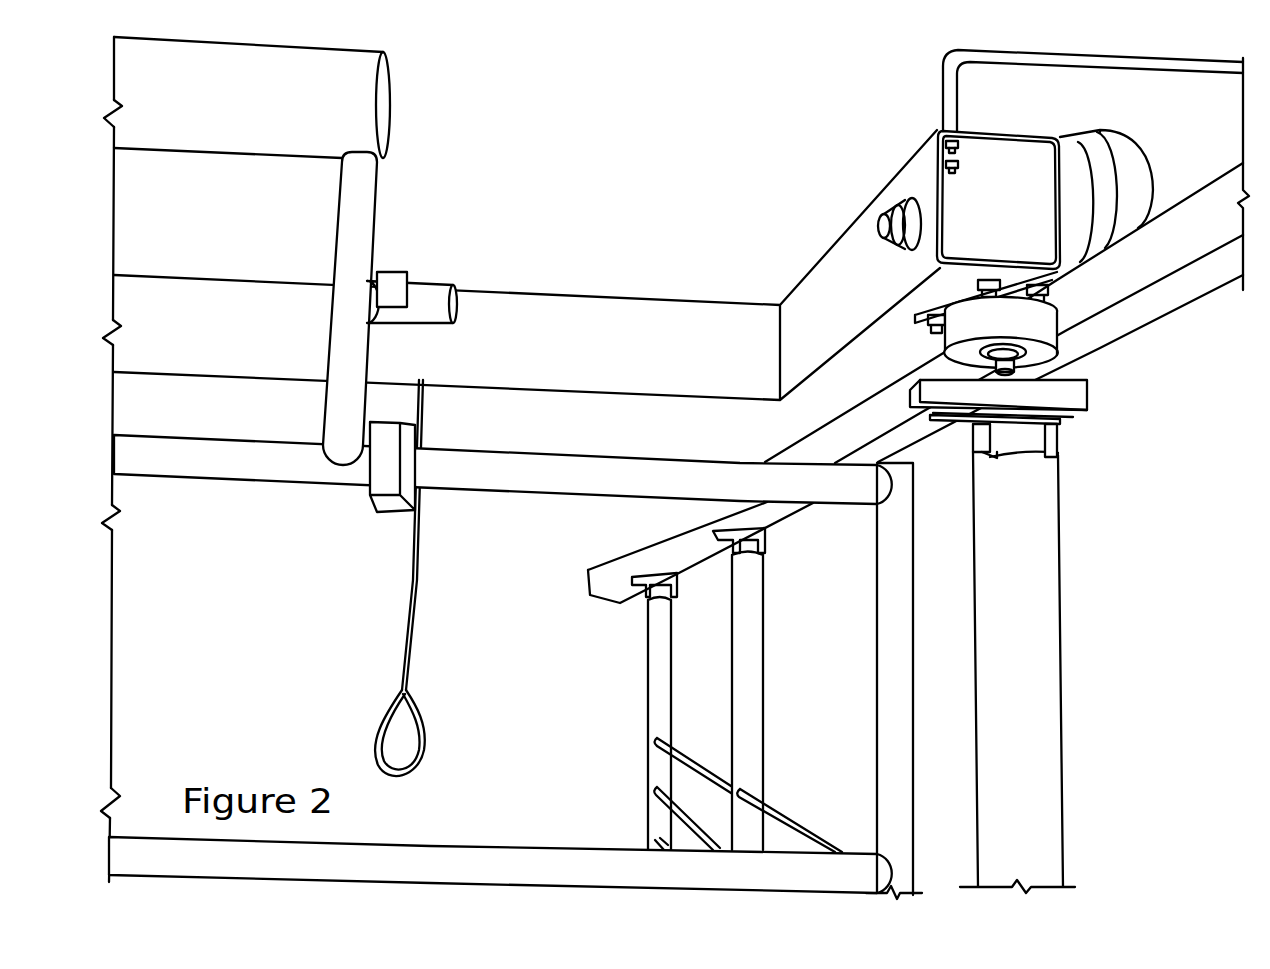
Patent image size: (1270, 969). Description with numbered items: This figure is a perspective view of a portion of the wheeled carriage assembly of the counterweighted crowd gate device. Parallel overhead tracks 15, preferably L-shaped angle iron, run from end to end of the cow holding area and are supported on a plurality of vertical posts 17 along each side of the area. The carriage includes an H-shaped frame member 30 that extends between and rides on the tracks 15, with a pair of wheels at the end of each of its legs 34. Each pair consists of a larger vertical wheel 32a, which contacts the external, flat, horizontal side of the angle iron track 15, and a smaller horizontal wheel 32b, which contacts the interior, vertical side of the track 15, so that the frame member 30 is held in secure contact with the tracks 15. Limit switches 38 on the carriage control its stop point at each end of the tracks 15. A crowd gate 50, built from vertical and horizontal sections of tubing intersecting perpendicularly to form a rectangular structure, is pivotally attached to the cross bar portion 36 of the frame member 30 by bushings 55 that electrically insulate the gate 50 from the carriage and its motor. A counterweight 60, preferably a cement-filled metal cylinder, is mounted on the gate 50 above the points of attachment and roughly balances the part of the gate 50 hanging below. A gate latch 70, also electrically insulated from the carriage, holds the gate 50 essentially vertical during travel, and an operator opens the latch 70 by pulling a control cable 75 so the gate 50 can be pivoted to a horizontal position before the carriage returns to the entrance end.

The overhead tracks 15 is at (770, 510).
The vertical posts 17 is at (663, 723).
The H-shaped frame member 30 is at (775, 357).
The larger vertical wheel 32a is at (1117, 148).
The smaller horizontal wheel 32b is at (1043, 323).
The legs 34 is at (858, 268).
The cross bar portion 36 is at (237, 327).
The limit switches 38 is at (985, 52).
The crowd gate 50 is at (530, 470).
The bushings 55 is at (387, 468).
The counterweight 60 is at (338, 115).
The gate latch 70 is at (392, 278).
The control cable 75 is at (416, 642).